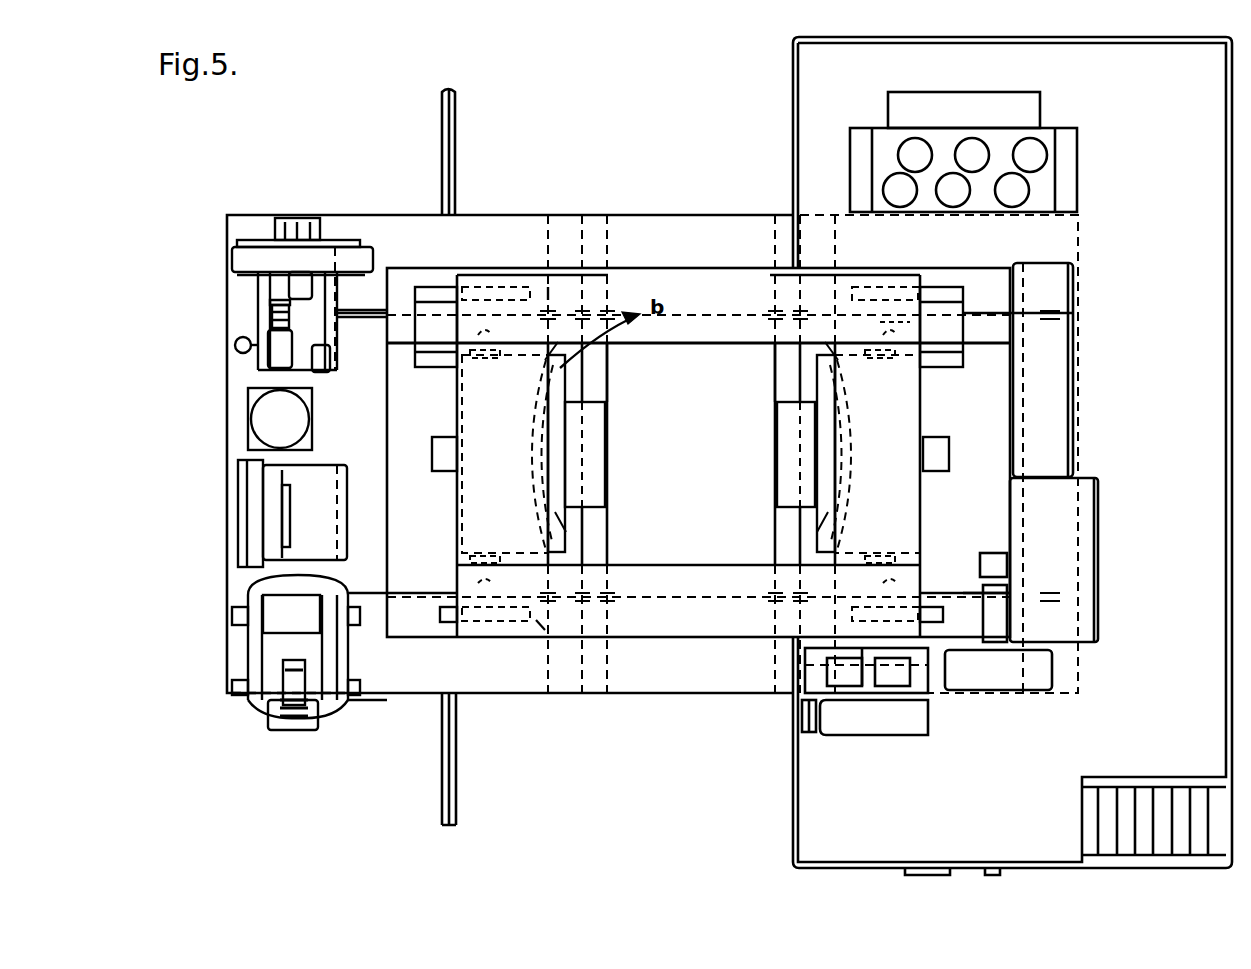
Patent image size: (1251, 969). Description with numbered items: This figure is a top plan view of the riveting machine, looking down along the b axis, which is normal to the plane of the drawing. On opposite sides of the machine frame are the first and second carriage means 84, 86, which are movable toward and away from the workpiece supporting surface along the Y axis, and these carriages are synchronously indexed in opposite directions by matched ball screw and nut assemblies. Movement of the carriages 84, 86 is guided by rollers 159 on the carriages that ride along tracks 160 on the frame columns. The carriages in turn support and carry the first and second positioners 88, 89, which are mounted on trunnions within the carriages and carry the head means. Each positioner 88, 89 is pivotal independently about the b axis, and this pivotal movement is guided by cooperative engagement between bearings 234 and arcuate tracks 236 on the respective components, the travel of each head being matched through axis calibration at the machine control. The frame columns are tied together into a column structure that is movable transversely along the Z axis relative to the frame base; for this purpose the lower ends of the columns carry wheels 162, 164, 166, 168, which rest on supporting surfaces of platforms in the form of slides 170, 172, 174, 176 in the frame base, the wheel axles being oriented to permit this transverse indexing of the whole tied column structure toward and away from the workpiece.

The first carriage means 84 is at (607, 370).
The second carriage means 86 is at (775, 370).
The first positioner 88 is at (590, 412).
The second positioner 89 is at (778, 408).
The rollers 159 is at (470, 335).
The tracks 160 is at (505, 325).
The wheel 162 is at (480, 290).
The wheel 164 is at (482, 640).
The wheel 166 is at (878, 290).
The wheel 168 is at (940, 660).
The slide 170 is at (512, 330).
The slide 172 is at (540, 632).
The slide 174 is at (895, 325).
The slide 176 is at (892, 692).
The bearings 234 is at (530, 418).
The arcuate tracks 236 is at (530, 490).